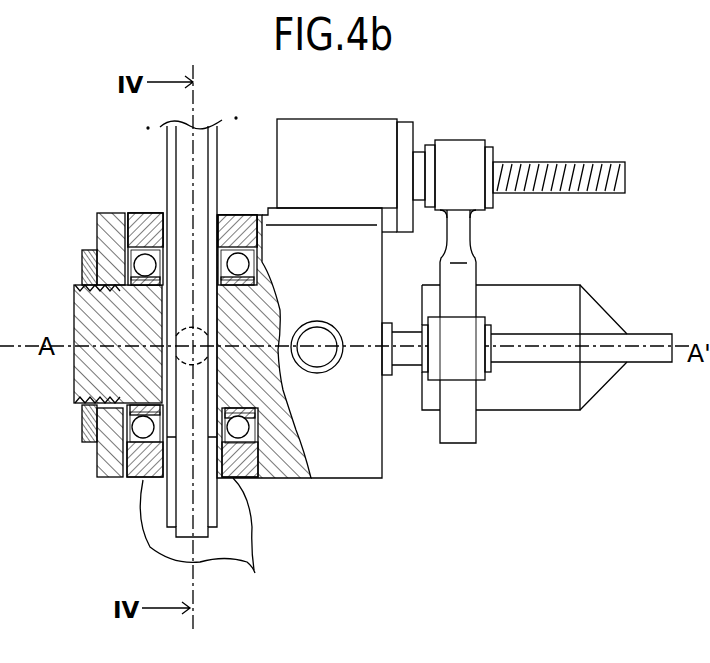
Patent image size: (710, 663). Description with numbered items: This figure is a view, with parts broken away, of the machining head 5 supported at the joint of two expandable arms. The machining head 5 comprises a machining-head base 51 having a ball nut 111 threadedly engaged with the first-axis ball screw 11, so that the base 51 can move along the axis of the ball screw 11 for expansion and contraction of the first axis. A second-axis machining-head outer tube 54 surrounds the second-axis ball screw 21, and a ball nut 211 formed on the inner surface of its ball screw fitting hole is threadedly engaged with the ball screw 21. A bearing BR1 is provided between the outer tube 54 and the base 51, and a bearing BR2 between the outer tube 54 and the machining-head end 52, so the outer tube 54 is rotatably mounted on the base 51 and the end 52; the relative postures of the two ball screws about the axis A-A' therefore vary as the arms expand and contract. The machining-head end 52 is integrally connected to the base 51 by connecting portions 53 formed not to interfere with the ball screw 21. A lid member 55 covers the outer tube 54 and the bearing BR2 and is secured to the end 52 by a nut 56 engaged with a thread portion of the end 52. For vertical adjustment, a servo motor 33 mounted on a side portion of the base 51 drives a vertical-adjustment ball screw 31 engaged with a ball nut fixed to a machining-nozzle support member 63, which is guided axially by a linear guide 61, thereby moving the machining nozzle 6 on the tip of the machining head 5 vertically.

The machining head 5 is at (490, 511).
The machining nozzle 6 is at (595, 300).
The first-axis ball screw 11 is at (305, 366).
The second-axis ball screw 21 is at (180, 167).
The vertical-adjustment ball screw 31 is at (572, 163).
The servo motor 33 is at (350, 130).
The machining-head base 51 is at (348, 433).
The machining-head end 52 is at (78, 397).
The connecting portions 53 is at (78, 373).
The second-axis machining-head outer tube 54 is at (142, 213).
The lid member 55 is at (103, 478).
The nut 56 is at (82, 256).
The linear guide 61 is at (648, 358).
The machining-nozzle support member 63 is at (465, 235).
The ball nut 111 is at (333, 362).
The ball nut 211 is at (221, 538).
The bearing BR1 is at (285, 473).
The bearing BR2 is at (122, 418).